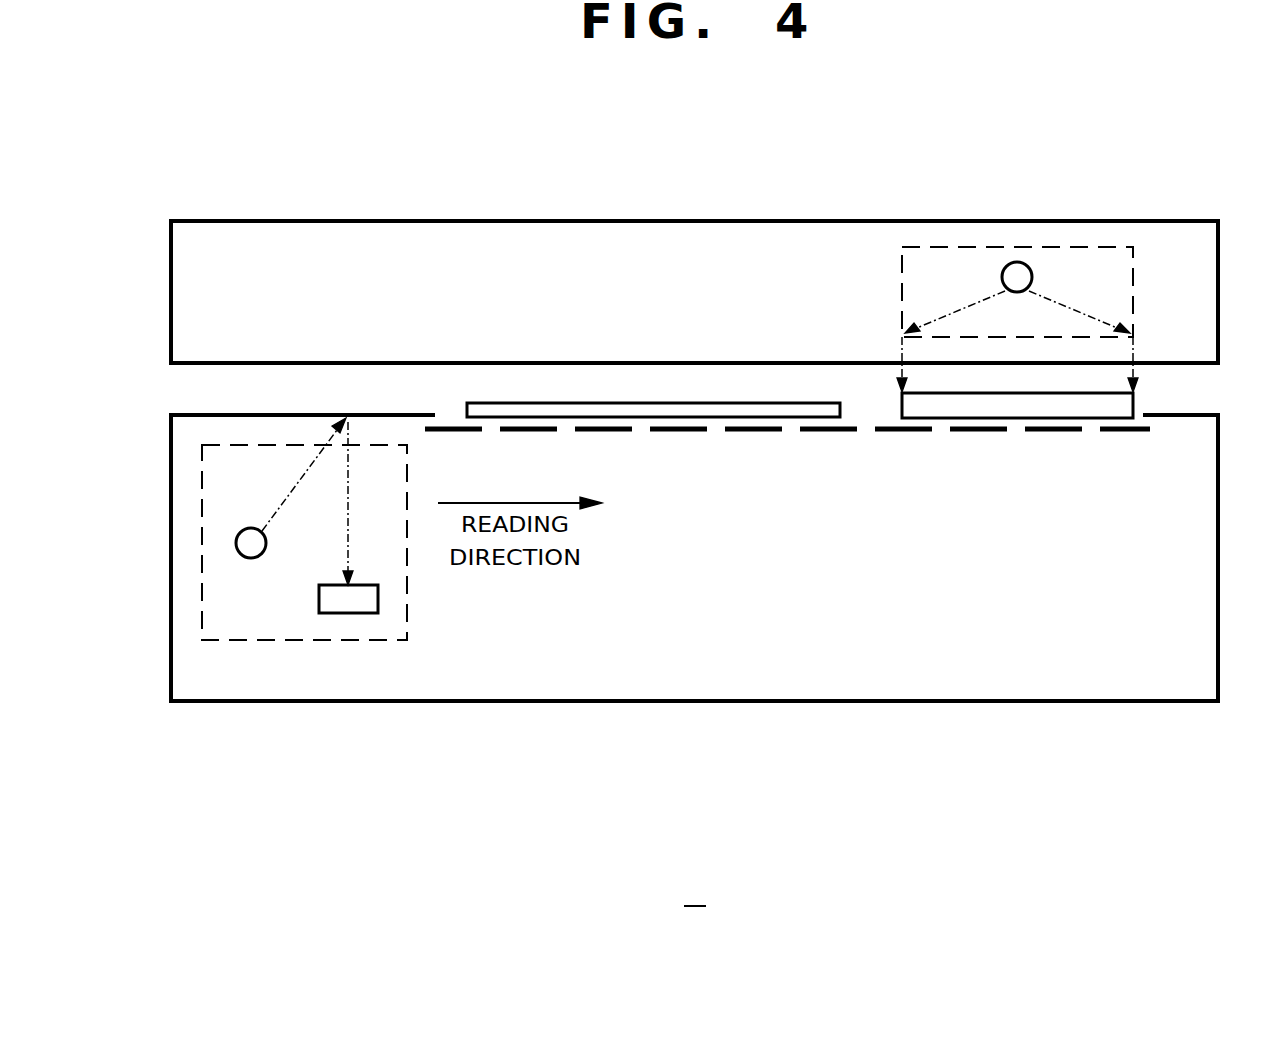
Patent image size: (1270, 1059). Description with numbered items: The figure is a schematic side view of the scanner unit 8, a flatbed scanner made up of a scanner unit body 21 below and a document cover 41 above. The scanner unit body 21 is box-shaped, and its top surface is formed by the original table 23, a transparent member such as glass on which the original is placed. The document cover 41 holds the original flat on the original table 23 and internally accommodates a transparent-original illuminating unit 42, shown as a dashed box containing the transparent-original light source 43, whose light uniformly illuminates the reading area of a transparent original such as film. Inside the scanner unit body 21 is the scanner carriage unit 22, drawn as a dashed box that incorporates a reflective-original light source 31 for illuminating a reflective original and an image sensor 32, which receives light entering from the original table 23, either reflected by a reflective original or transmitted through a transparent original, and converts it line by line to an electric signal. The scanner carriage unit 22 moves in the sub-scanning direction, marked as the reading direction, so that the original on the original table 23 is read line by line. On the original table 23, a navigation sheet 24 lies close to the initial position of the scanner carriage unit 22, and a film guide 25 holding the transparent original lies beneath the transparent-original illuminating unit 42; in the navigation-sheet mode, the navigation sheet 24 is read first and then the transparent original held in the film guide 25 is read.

The scanner unit 8 is at (695, 890).
The scanner unit body 21 is at (885, 702).
The scanner carriage unit 22 is at (308, 641).
The original table 23 is at (613, 432).
The navigation sheet 24 is at (793, 419).
The film guide 25 is at (934, 410).
The reflective-original light source 31 is at (251, 560).
The image sensor 32 is at (378, 598).
The document cover 41 is at (313, 221).
The transparent-original illuminating unit 42 is at (924, 236).
The transparent-original light source 43 is at (1017, 262).